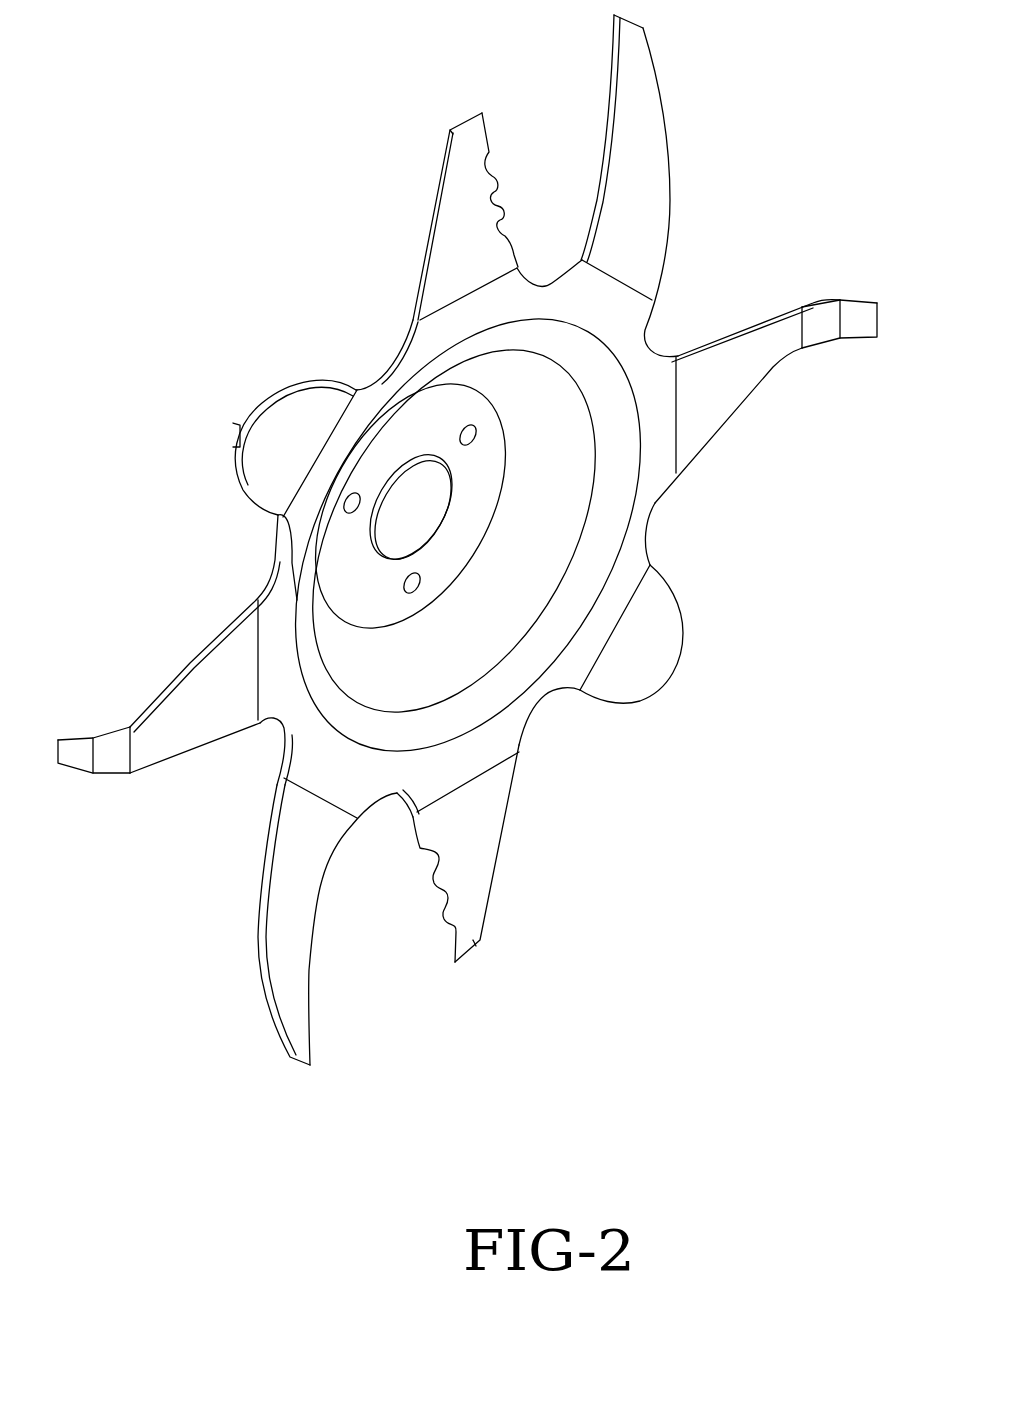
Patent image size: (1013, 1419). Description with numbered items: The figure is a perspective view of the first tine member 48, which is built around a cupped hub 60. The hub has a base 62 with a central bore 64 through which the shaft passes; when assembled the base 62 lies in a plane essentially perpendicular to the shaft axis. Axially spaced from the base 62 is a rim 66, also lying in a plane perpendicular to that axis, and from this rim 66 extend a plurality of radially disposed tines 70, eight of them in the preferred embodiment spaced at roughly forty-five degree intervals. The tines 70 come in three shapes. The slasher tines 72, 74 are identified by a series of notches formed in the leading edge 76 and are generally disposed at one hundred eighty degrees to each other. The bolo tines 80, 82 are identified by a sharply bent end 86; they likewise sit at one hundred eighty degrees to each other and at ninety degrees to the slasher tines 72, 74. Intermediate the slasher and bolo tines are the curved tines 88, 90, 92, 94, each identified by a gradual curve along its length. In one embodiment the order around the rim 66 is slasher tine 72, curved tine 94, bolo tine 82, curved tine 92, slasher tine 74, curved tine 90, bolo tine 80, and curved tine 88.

The first tine member 48 is at (680, 808).
The cupped hub 60 is at (570, 450).
The base 62 is at (350, 578).
The central bore 64 is at (408, 497).
The rim 66 is at (637, 514).
The tines 70 is at (598, 678).
The slasher tine 72 is at (472, 937).
The slasher tine 74 is at (480, 128).
The leading edge 76 is at (497, 200).
The bolo tine 80 is at (704, 422).
The bolo tine 82 is at (192, 690).
The sharply bent end 86 is at (853, 323).
The curved tine 88 is at (672, 634).
The curved tine 90 is at (648, 176).
The curved tine 92 is at (273, 418).
The curved tine 94 is at (283, 965).